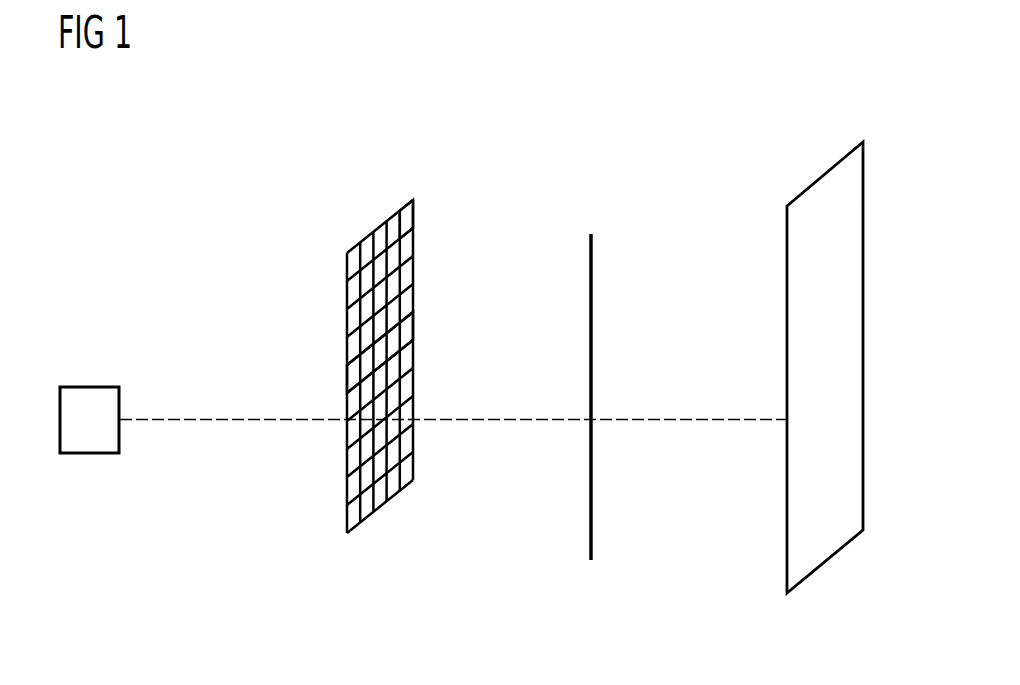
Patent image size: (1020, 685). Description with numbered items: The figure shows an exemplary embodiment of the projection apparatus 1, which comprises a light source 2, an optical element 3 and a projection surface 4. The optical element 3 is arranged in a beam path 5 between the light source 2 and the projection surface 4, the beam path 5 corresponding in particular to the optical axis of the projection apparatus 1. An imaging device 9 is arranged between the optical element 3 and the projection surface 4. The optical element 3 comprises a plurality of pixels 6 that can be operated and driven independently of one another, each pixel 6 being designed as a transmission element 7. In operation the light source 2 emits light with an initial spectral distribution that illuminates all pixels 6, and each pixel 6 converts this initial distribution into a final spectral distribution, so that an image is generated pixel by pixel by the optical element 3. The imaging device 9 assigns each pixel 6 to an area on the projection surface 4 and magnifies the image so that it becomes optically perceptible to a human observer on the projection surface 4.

The projection apparatus 1 is at (200, 254).
The light source 2 is at (90, 386).
The optical element 3 is at (346, 471).
The projection surface 4 is at (786, 530).
The beam path 5 is at (194, 418).
The pixels 6 is at (415, 243).
The transmission element 7 is at (415, 353).
The imaging device 9 is at (593, 544).